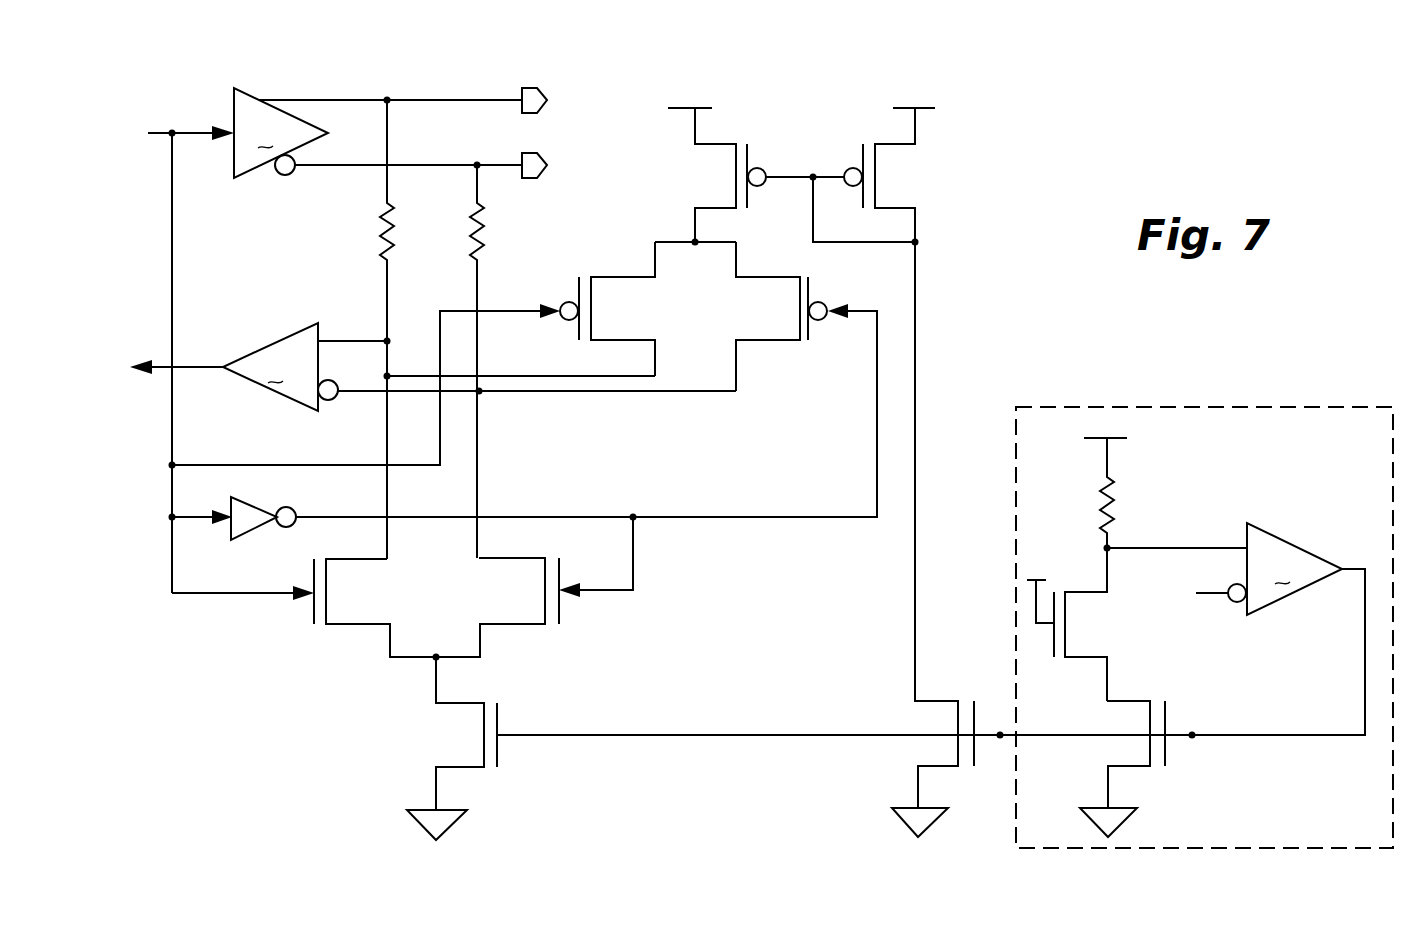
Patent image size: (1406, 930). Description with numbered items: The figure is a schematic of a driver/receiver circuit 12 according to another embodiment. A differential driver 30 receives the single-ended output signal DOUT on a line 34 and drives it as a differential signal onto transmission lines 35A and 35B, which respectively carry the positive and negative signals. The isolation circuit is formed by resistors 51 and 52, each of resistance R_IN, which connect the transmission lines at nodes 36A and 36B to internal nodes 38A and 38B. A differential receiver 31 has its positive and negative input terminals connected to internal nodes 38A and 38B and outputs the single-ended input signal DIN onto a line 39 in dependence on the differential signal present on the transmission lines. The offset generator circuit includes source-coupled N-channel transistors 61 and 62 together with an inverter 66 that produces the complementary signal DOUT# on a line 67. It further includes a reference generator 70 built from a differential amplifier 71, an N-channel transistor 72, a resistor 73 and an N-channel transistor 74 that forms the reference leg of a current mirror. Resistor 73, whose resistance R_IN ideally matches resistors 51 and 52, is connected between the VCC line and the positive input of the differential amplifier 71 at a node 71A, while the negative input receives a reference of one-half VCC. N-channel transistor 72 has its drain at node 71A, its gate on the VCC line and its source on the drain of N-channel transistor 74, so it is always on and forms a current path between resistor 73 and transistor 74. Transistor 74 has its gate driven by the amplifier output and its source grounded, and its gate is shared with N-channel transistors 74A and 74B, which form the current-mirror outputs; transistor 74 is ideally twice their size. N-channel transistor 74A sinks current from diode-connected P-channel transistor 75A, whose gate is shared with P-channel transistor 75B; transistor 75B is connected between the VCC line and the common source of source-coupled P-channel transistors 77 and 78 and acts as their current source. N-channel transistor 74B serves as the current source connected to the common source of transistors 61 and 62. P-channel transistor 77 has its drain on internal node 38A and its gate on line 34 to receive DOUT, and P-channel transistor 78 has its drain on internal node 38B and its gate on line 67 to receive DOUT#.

The driver/receiver circuit 12 is at (1117, 128).
The differential driver 30 is at (355, 118).
The differential receiver 31 is at (280, 367).
The line 34 is at (208, 131).
The transmission line 35A is at (478, 97).
The transmission line 35B is at (500, 162).
The node 36A is at (387, 97).
The node 36B is at (477, 162).
The internal node 38A is at (386, 338).
The internal node 38B is at (481, 393).
The line 39 is at (196, 365).
The resistor 51 is at (380, 238).
The resistor 52 is at (487, 205).
The N-channel transistor 61 is at (360, 625).
The N-channel transistor 62 is at (507, 625).
The inverter 66 is at (257, 529).
The line 67 is at (763, 518).
The reference generator 70 is at (1232, 405).
The differential amplifier 71 is at (1246, 631).
The node 71A is at (1105, 546).
The N-channel transistor 72 is at (1083, 591).
The resistor 73 is at (1098, 489).
The N-channel transistor 74 is at (1128, 701).
The N-channel transistor 74A is at (930, 761).
The N-channel transistor 74B is at (500, 757).
The P-channel transistor 75A is at (888, 143).
The P-channel transistor 75B is at (717, 143).
The P-channel transistor 77 is at (618, 340).
The P-channel transistor 78 is at (767, 340).